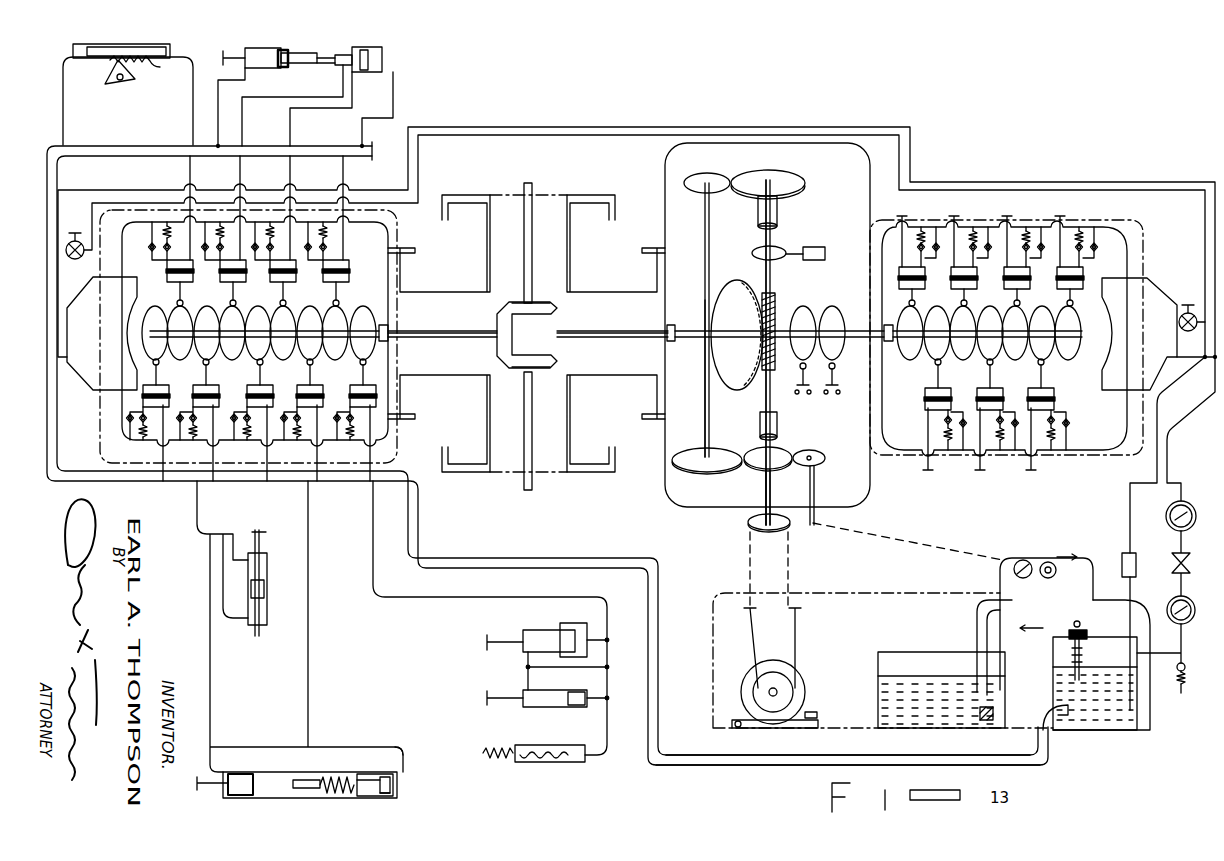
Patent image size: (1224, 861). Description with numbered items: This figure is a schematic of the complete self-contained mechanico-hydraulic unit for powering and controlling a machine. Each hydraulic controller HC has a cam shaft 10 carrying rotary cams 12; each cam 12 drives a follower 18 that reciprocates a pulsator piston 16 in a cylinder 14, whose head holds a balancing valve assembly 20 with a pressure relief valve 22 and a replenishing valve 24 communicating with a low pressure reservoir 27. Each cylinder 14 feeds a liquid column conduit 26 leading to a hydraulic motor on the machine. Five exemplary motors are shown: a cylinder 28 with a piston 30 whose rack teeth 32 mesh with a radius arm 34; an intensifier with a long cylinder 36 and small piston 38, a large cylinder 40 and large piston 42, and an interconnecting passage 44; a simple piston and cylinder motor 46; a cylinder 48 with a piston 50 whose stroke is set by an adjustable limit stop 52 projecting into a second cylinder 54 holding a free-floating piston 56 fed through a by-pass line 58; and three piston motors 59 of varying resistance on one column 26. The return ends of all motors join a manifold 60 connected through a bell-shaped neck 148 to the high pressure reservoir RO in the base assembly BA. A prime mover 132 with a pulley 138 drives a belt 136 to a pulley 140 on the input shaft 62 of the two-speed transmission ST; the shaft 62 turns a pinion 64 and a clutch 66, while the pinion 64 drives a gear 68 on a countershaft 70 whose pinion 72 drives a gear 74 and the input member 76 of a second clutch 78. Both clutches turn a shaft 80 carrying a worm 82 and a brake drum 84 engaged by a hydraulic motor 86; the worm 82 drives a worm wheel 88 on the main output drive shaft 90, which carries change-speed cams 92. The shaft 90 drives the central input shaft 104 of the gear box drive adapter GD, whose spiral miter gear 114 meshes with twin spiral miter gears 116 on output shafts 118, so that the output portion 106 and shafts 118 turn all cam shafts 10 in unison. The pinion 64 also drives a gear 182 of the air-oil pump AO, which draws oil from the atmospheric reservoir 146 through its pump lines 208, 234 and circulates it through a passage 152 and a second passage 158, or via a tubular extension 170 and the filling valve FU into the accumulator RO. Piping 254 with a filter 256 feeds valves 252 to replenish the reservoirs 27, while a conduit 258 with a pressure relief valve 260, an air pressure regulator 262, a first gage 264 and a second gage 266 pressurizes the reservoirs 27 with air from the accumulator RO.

The cam shaft 10 is at (378, 329).
The rotary cam 12 is at (308, 322).
The cylinder 14 is at (920, 262).
The pulsator piston 16 is at (932, 305).
The follower 18 is at (900, 276).
The balancing valve assembly 20 is at (918, 227).
The pressure relief valve 22 is at (922, 242).
The replenishing valve 24 is at (937, 242).
The liquid column conduit 26 is at (398, 94).
The reservoir 27 is at (78, 385).
The cylinder 28 is at (92, 46).
The piston 30 is at (166, 48).
The rack teeth 32 is at (140, 66).
The radius arm 34 is at (108, 68).
The long cylinder 36 is at (302, 53).
The piston 38 is at (283, 50).
The large cylinder 40 is at (376, 48).
The piston 42 is at (386, 58).
The interconnecting passage 44 is at (323, 70).
The piston and cylinder motor 46 is at (268, 566).
The cylinder 48 is at (264, 770).
The piston 50 is at (238, 772).
The adjustable limit stop 52 is at (332, 772).
The second cylinder 54 is at (381, 770).
The free-floating piston 56 is at (396, 797).
The by-pass line 58 is at (404, 760).
The piston motor 59 is at (528, 634).
The manifold 60 is at (712, 763).
The input shaft 62 is at (764, 492).
The pinion 64 is at (786, 455).
The clutch 66 is at (778, 428).
The gear 68 is at (720, 449).
The countershaft 70 is at (705, 402).
The pinion 72 is at (703, 194).
The gear 74 is at (760, 174).
The input member 76 is at (782, 192).
The clutch 78 is at (760, 220).
The shaft 80 is at (773, 292).
The worm 82 is at (777, 318).
The brake drum 84 is at (787, 250).
The hydraulic motor 86 is at (826, 253).
The worm wheel 88 is at (728, 290).
The main output drive shaft 90 is at (845, 325).
The change-speed cam 92 is at (826, 306).
The central input shaft 104 is at (630, 341).
The output portion 106 is at (430, 325).
The spiral miter gear 114 is at (496, 320).
The spiral miter gear 116 is at (513, 300).
The output shaft 118 is at (530, 268).
The prime mover 132 is at (806, 670).
The belt 136 is at (797, 660).
The pulley 138 is at (795, 692).
The pulley 140 is at (750, 517).
The reservoir 146 is at (933, 647).
The bell-shaped neck 148 is at (1066, 720).
The passage 152 is at (1095, 600).
The second passage 158 is at (1040, 630).
The tubular extension 170 is at (1082, 660).
The gear 182 is at (816, 456).
The pipe 208 is at (977, 615).
The pipe 234 is at (1045, 598).
The valve 252 is at (74, 240).
The piping 254 is at (419, 164).
The filter 256 is at (1122, 568).
The conduit 258 is at (578, 127).
The pressure relief valve 260 is at (1178, 690).
The air pressure regulator 262 is at (1172, 568).
The pressure gage 264 is at (1168, 608).
The pressure gage 266 is at (1167, 518).
The hydraulic controller unit HC is at (399, 233).
The gear box drive adapter GD is at (574, 273).
The two-speed transmission ST is at (877, 501).
The base assembly BA is at (843, 586).
The air-oil pump AO is at (1046, 562).
The float unit FU is at (1087, 625).
The high pressure reservoir RO is at (1105, 721).